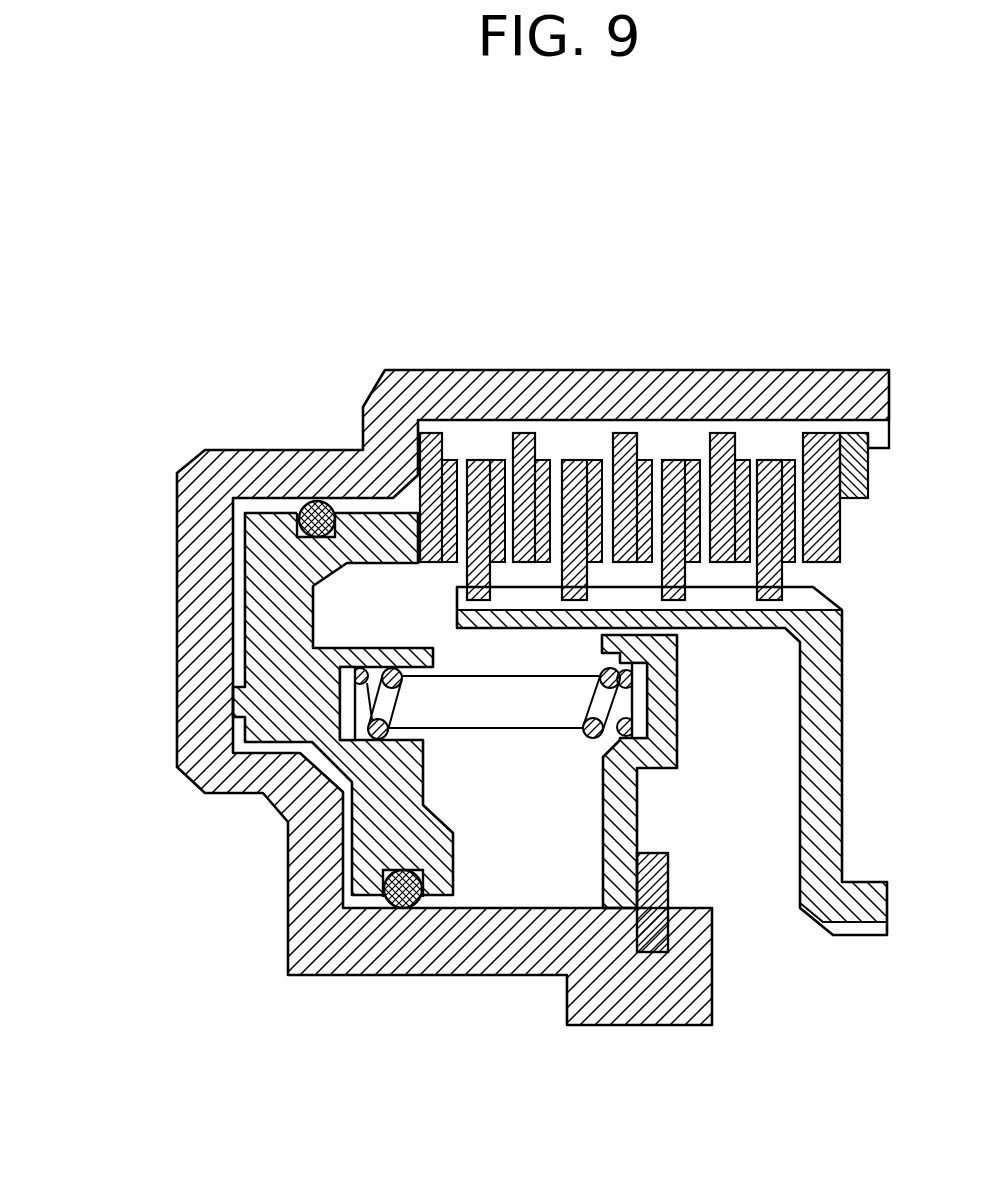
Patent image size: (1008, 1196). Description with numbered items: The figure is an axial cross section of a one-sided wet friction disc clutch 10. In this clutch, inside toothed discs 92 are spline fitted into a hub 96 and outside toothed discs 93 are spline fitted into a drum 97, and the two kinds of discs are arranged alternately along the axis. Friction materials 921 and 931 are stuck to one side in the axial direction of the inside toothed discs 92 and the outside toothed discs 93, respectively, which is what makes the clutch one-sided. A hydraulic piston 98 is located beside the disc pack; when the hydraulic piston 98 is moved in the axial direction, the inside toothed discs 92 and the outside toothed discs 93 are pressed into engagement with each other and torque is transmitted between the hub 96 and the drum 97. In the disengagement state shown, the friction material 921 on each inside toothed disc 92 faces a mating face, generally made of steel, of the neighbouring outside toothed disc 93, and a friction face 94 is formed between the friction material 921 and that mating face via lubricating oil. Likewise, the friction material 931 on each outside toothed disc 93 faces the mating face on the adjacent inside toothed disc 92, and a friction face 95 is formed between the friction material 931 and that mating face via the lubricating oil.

The one-sided wet friction disc clutch 10 is at (172, 691).
The inside toothed discs 92 is at (472, 568).
The friction material 921 is at (698, 477).
The outside toothed discs 93 is at (432, 437).
The friction material 931 is at (745, 477).
The friction face 94 is at (703, 477).
The friction face 95 is at (755, 480).
The hub 96 is at (828, 795).
The drum 97 is at (867, 387).
The hydraulic piston 98 is at (265, 542).